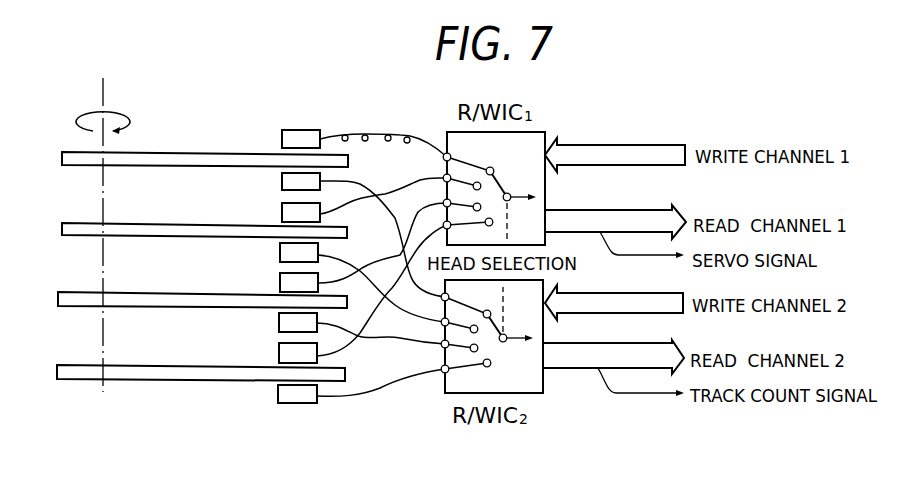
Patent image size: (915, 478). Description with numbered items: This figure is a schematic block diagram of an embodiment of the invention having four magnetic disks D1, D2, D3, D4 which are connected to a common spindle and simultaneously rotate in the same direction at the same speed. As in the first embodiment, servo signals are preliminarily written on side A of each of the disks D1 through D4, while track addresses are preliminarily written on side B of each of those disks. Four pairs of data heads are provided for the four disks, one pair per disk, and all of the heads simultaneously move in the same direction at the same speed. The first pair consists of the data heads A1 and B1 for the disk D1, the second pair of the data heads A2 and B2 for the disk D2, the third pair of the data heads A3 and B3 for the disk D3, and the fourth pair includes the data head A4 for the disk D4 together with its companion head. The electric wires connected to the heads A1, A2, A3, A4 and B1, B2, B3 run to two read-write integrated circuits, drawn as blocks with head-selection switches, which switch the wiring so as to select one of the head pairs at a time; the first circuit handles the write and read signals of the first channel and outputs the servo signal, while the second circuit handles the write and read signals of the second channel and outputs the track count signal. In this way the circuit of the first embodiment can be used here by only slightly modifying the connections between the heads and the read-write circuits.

The magnetic disk D1 is at (205, 132).
The magnetic disk D2 is at (204, 207).
The magnetic disk D3 is at (202, 275).
The magnetic disk D4 is at (201, 348).
The data head A1 is at (282, 138).
The data head A2 is at (282, 212).
The data head A3 is at (280, 283).
The data head A4 is at (279, 353).
The data head B1 is at (282, 182).
The data head B2 is at (280, 253).
The data head B3 is at (279, 323).